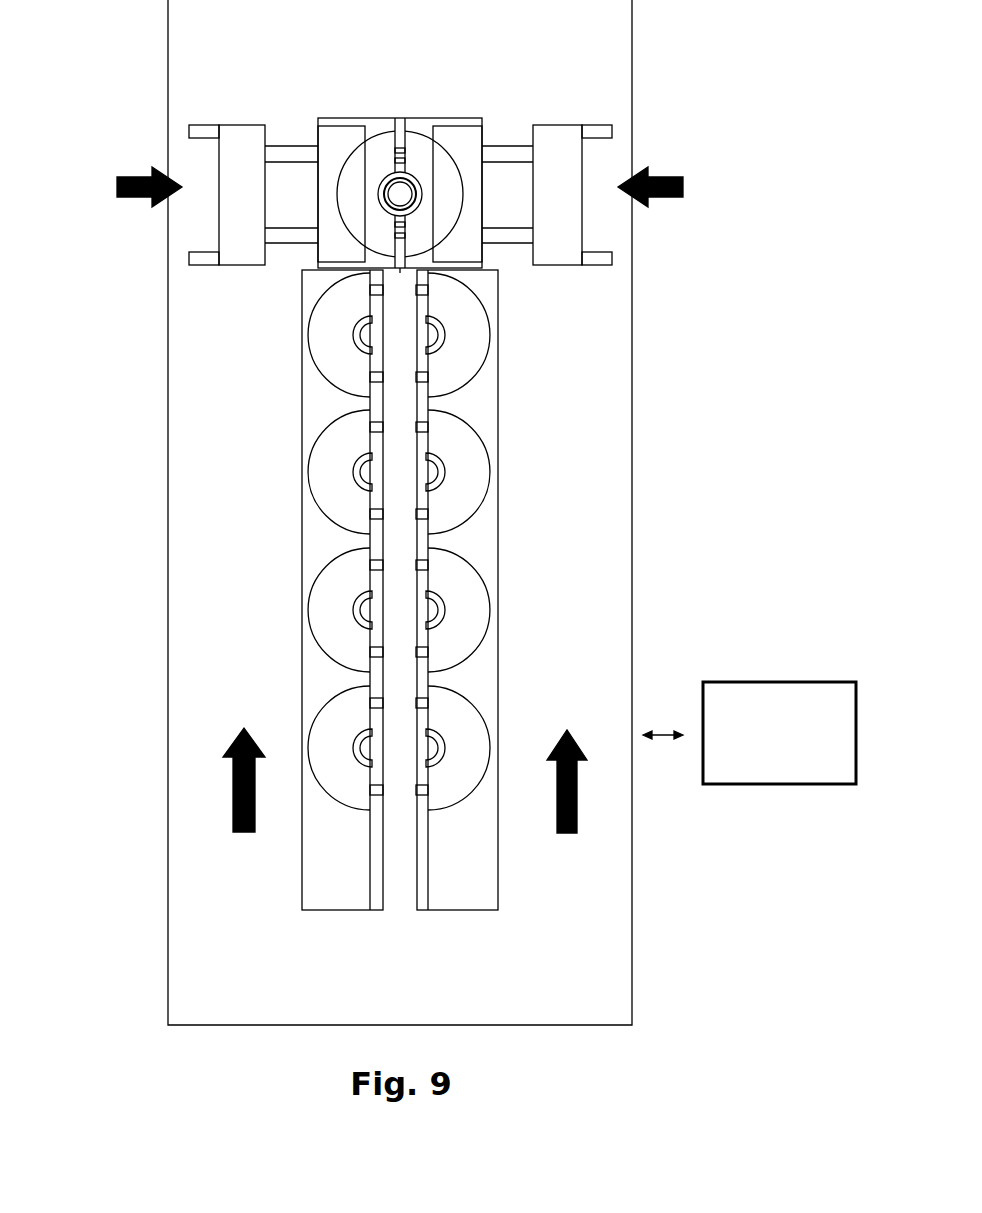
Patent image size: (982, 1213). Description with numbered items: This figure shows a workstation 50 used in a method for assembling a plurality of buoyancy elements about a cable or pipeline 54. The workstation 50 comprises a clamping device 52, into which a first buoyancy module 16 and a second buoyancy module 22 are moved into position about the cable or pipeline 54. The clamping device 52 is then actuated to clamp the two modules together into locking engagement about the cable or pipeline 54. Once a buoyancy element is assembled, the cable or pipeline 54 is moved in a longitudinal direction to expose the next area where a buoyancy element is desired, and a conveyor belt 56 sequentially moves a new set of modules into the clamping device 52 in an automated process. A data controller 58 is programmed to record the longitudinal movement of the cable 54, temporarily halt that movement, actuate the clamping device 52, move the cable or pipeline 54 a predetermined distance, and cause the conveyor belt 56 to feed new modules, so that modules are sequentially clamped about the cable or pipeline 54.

The first buoyancy module 16 is at (433, 177).
The second buoyancy module 22 is at (360, 185).
The workstation 50 is at (188, 588).
The clamping device 52 is at (235, 199).
The cable or pipeline 54 is at (402, 187).
The conveyor belt 56 is at (482, 553).
The data controller 58 is at (777, 785).